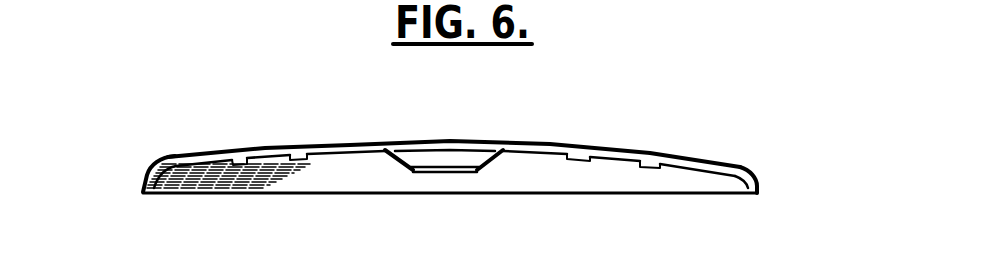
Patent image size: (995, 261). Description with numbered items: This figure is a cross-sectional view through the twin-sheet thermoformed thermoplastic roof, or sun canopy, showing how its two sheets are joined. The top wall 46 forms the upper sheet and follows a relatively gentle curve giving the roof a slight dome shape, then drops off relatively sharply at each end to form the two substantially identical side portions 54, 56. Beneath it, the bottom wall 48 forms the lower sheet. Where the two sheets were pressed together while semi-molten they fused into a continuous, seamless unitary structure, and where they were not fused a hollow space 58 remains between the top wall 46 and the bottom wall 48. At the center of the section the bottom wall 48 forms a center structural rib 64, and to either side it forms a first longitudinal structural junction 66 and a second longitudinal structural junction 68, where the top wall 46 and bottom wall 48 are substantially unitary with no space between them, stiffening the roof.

The top wall 46 is at (553, 145).
The bottom wall 48 is at (477, 172).
The side portion 54 is at (748, 172).
The side portion 56 is at (147, 178).
The space 58 is at (166, 160).
The center structural rib 64 is at (413, 172).
The first longitudinal structural junction 66 is at (648, 167).
The second longitudinal structural junction 68 is at (247, 157).